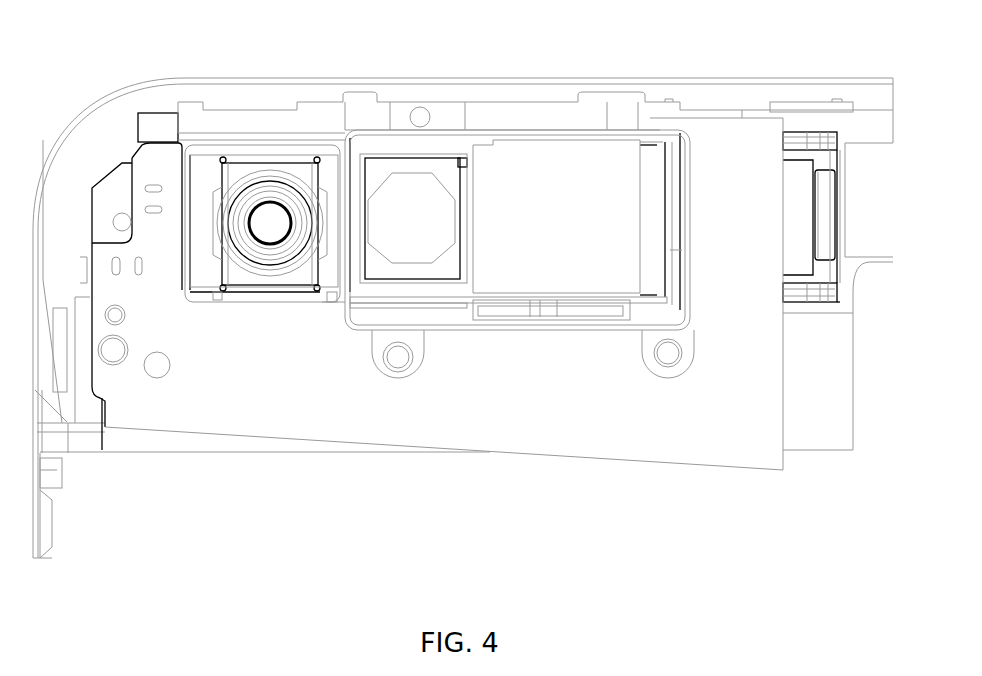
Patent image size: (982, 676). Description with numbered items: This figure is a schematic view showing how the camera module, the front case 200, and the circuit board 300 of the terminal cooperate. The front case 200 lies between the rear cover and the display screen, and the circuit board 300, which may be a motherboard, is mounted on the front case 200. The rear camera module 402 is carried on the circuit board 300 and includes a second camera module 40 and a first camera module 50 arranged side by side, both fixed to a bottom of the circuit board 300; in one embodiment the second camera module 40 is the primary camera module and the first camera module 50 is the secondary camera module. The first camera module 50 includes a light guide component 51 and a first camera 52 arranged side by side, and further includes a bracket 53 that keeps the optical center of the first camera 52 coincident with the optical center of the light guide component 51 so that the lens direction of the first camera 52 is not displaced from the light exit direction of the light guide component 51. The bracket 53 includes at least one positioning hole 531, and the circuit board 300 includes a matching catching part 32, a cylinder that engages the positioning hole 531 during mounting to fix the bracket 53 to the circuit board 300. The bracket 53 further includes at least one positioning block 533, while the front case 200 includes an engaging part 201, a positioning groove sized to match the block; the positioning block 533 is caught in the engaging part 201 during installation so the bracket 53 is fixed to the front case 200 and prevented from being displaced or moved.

The front case 200 is at (232, 96).
The engaging part 201 is at (347, 105).
The positioning block 533 is at (372, 118).
The second camera module 40 is at (265, 290).
The rear camera module 402 is at (329, 305).
The first camera module 50 is at (407, 307).
The light guide component 51 is at (418, 272).
The first camera 52 is at (550, 285).
The bracket 53 is at (678, 327).
The positioning hole 531 is at (663, 375).
The catching part 32 is at (668, 356).
The circuit board 300 is at (511, 420).